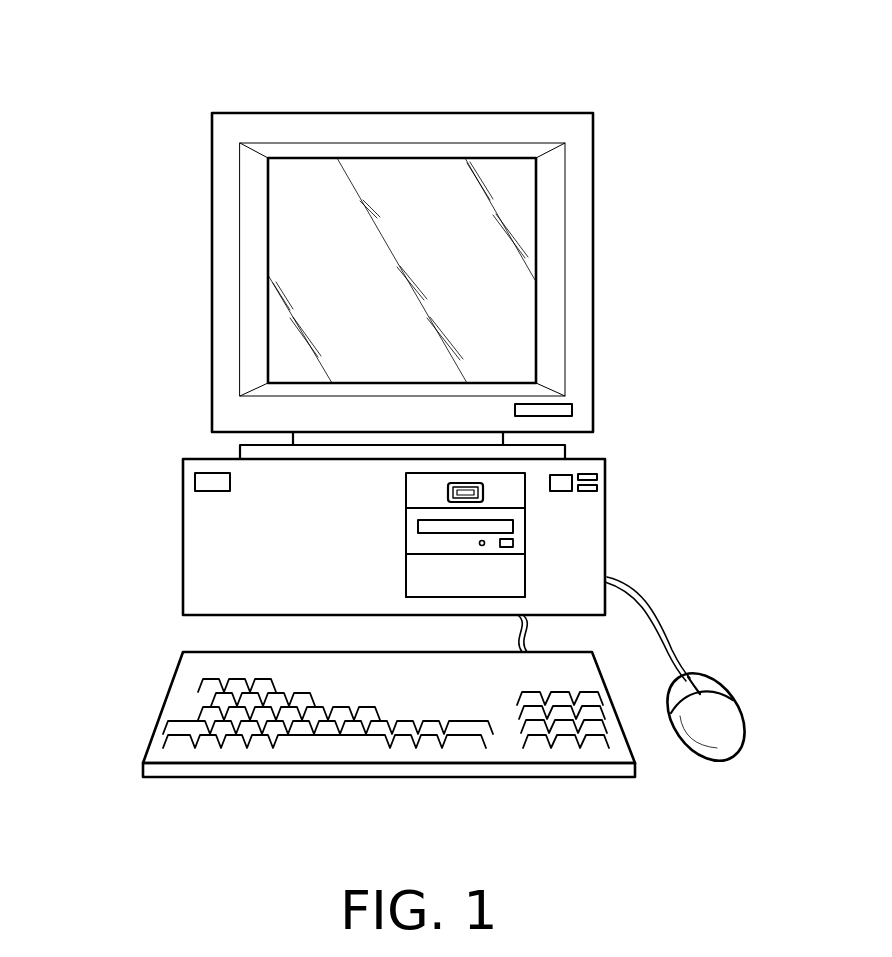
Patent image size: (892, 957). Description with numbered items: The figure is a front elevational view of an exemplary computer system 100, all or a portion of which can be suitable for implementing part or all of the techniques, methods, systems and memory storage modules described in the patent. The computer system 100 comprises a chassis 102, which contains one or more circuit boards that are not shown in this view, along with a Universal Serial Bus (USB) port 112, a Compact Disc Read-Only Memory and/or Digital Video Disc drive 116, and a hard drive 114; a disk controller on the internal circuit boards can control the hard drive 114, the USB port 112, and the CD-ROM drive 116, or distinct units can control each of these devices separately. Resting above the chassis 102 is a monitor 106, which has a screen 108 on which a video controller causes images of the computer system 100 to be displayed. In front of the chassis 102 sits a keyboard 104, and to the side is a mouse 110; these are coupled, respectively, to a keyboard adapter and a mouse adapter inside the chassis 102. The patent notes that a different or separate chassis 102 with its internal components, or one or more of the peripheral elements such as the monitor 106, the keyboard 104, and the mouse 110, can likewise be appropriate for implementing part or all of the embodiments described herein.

The computer system 100 is at (583, 90).
The chassis 102 is at (183, 540).
The keyboard 104 is at (167, 712).
The monitor 106 is at (289, 113).
The screen 108 is at (318, 274).
The mouse 110 is at (726, 708).
The Universal Serial Bus (USB) port 112 is at (483, 491).
The hard drive 114 is at (518, 575).
The CD-ROM and/or DVD drive 116 is at (515, 531).